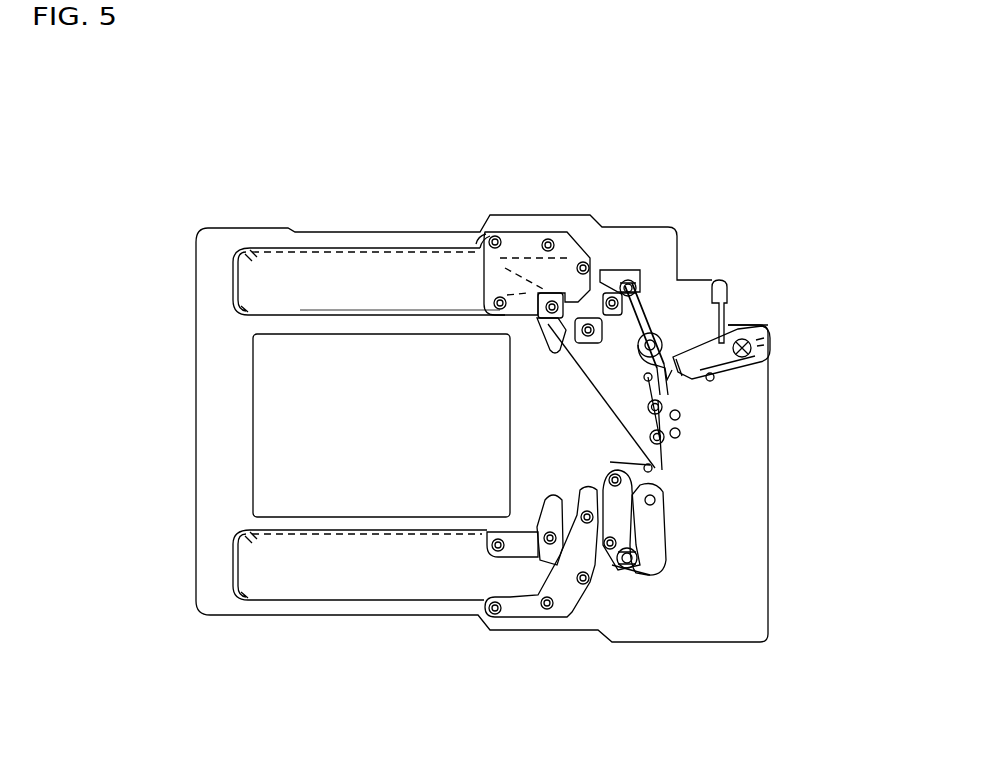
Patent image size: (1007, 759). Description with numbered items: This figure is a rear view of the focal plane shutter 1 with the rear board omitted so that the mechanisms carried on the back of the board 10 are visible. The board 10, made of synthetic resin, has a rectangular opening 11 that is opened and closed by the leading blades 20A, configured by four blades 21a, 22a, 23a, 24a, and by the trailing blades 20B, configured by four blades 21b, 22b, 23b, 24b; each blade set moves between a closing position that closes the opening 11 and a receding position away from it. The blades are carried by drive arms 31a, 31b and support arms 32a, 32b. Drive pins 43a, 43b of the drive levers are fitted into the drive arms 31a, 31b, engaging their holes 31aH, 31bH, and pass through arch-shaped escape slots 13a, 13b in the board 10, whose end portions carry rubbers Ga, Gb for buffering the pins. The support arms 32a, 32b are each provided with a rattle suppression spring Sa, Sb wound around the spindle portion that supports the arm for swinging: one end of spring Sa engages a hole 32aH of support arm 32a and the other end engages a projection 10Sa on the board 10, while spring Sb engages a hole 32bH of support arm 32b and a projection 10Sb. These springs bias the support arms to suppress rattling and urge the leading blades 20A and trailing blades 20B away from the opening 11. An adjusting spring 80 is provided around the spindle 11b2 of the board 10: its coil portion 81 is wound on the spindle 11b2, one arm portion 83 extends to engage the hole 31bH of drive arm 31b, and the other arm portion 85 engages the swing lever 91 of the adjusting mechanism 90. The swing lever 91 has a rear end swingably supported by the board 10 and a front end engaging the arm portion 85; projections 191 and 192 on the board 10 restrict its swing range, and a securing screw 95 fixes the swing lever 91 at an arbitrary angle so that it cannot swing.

The focal plane shutter 1 is at (701, 148).
The board 10 is at (753, 648).
The opening 11 is at (382, 336).
The spindle 11b2 is at (746, 305).
The escape slot 13a is at (608, 578).
The escape slot 13b is at (593, 232).
The leading blades 20A is at (354, 632).
The trailing blades 20B is at (367, 206).
The blade 21a is at (355, 610).
The blade 22a is at (360, 565).
The blade 23a is at (360, 565).
The blade 24a is at (360, 565).
The blade 21b is at (367, 230).
The blade 22b is at (369, 281).
The blade 23b is at (369, 281).
The blade 24b is at (369, 281).
The drive arm 31a is at (527, 600).
The drive arm 31b is at (517, 216).
The hole 31aH is at (660, 553).
The hole 31bH is at (625, 303).
The support arm 32a is at (508, 562).
The support arm 32b is at (469, 228).
The hole 32aH is at (640, 463).
The hole 32bH is at (643, 367).
The drive pin 43a is at (630, 578).
The drive pin 43b is at (607, 290).
The adjusting spring 80 is at (667, 328).
The coil portion 81 is at (656, 327).
The arm portion 83 is at (652, 318).
The arm portion 85 is at (662, 368).
The adjusting mechanism 90 is at (831, 340).
The swing lever 91 is at (726, 372).
The securing screw 95 is at (745, 360).
The projection 191 is at (714, 380).
The projection 192 is at (728, 328).
The projection 10Sa is at (683, 415).
The projection 10Sb is at (683, 433).
The rattle suppression spring Sa is at (660, 467).
The rattle suppression spring Sb is at (650, 406).
The rubber Ga is at (655, 578).
The rubber Gb is at (627, 310).